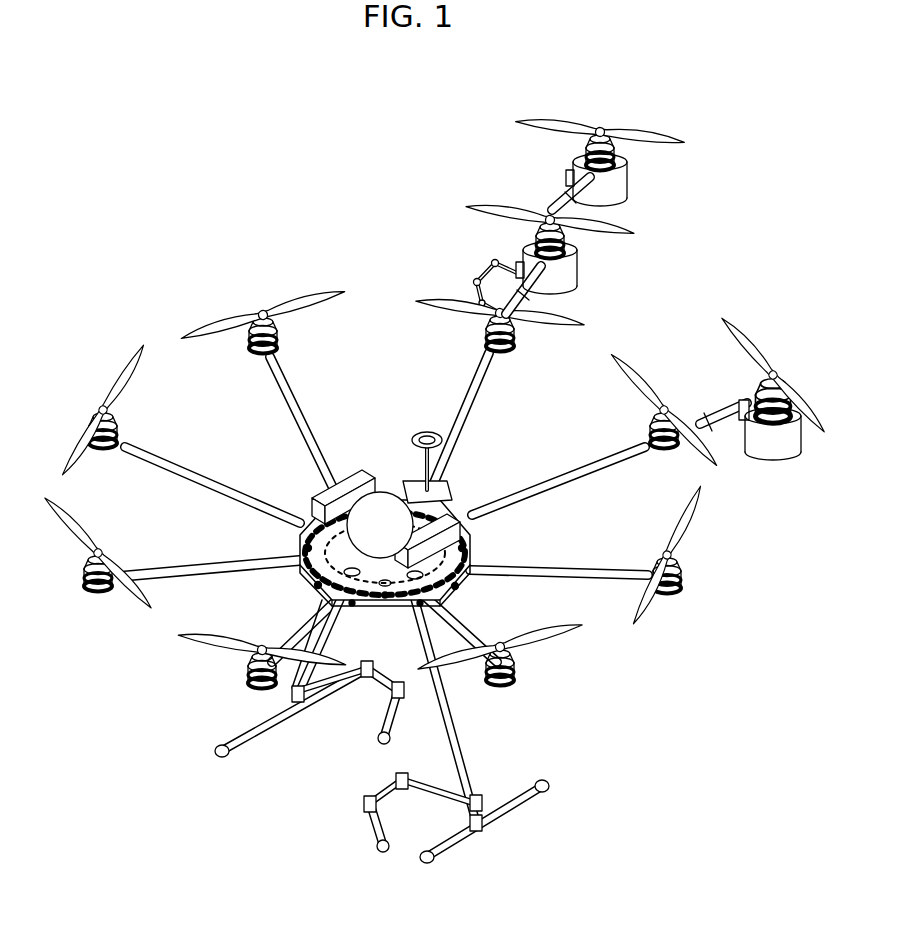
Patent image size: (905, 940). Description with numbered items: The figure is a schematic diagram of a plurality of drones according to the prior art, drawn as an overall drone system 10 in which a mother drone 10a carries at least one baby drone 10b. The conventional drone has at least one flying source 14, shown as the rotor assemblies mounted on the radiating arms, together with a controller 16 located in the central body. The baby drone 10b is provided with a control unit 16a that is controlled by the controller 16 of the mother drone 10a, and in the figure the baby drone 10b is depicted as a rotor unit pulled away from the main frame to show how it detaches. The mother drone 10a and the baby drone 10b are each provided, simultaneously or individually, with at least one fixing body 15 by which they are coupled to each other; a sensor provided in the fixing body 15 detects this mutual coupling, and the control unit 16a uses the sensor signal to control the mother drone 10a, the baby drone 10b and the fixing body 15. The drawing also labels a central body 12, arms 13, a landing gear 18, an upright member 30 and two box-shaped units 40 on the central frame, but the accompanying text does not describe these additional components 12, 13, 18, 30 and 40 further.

The unmanned aerial vehicle 10 is at (213, 138).
The mother drone 10a is at (152, 330).
The baby drone 10b is at (710, 364).
The main body frame 12 is at (474, 602).
The arm 13 is at (197, 488).
The flying source 14 is at (515, 348).
The fixing body 15 is at (578, 178).
The controller 16 is at (384, 510).
The control unit 16a is at (774, 425).
The landing gear 18 is at (371, 801).
The antenna 30 is at (426, 430).
The control box 40 is at (308, 490).